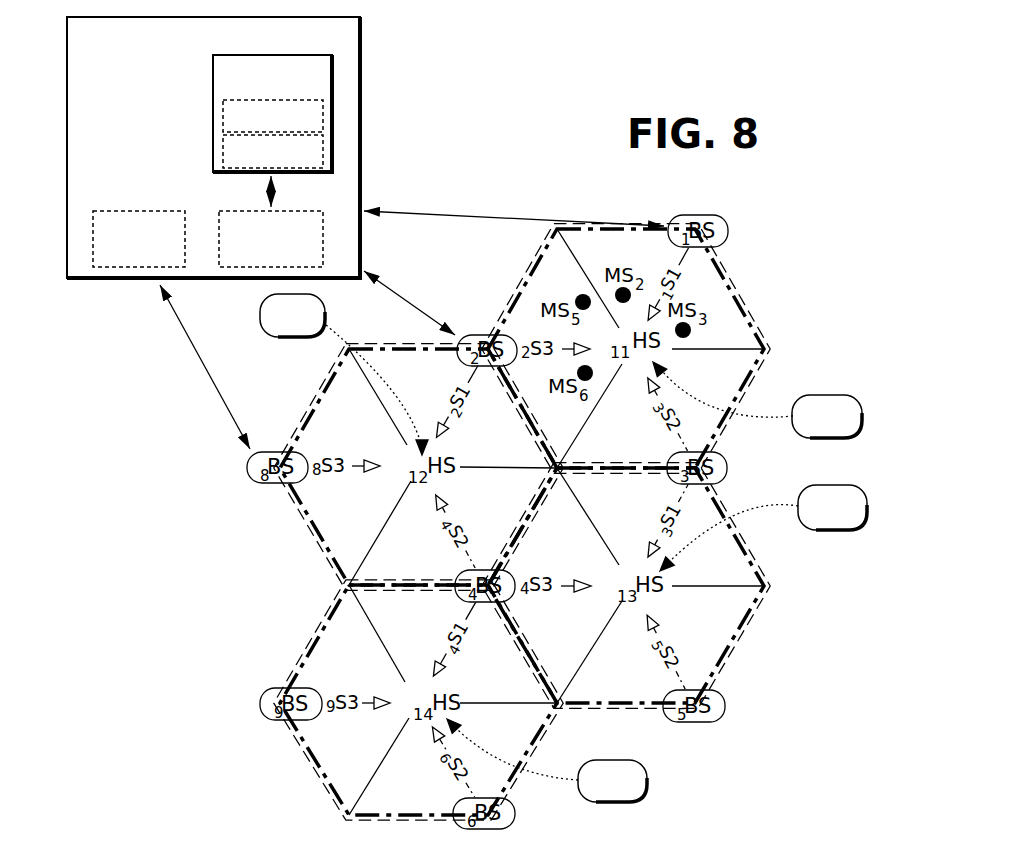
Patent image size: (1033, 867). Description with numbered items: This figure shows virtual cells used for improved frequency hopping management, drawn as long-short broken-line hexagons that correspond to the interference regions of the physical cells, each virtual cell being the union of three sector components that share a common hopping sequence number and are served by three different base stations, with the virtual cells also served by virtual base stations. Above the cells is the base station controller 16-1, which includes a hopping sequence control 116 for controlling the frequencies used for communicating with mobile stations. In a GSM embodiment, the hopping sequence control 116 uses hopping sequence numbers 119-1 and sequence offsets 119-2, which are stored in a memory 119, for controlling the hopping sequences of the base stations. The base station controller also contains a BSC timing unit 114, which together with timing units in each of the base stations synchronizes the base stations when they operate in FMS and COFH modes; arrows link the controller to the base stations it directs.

The base station controller 16-1 is at (360, 28).
The memory 119 is at (332, 78).
The hopping sequence numbers 119-1 is at (323, 117).
The sequence offsets 119-2 is at (323, 152).
The hopping sequence control 116 is at (323, 238).
The BSC timing unit 114 is at (113, 267).